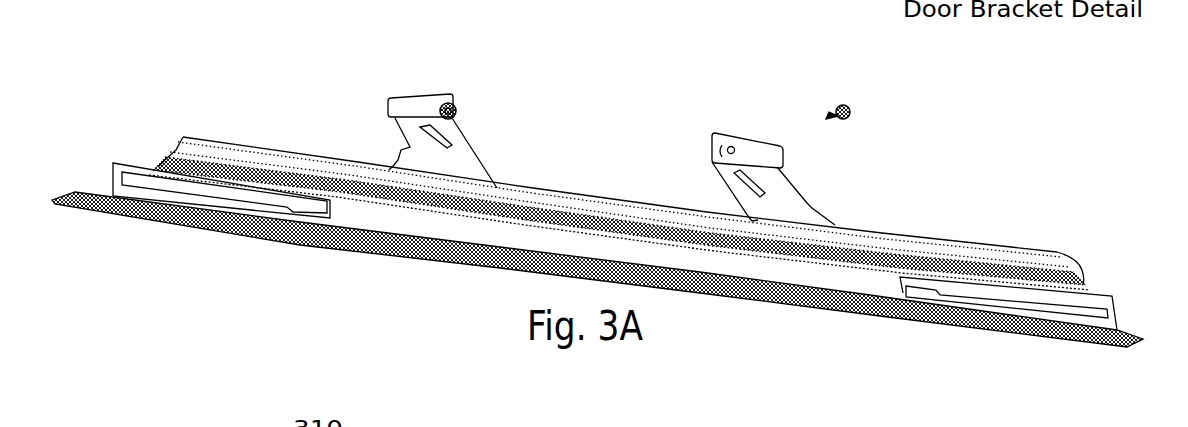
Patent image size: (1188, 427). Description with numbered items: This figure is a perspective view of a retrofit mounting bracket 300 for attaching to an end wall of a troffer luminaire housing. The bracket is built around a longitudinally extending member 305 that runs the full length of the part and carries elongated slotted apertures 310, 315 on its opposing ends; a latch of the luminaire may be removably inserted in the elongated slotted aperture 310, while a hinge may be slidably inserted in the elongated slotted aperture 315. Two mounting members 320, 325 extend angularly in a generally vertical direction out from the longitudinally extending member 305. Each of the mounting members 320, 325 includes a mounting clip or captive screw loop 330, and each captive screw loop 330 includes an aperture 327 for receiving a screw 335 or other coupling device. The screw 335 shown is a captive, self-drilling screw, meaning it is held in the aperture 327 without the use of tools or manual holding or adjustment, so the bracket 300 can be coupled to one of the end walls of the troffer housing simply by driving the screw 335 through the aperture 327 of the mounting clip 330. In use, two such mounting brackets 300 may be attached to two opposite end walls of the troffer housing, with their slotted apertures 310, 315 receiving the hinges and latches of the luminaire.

The retrofit mounting bracket 300 is at (885, 232).
The longitudinally extending member 305 is at (473, 225).
The elongated slotted aperture 310 is at (227, 193).
The elongated slotted aperture 315 is at (928, 287).
The mounting member 320 is at (780, 205).
The mounting member 325 is at (458, 163).
The aperture 327 is at (710, 137).
The captive screw loop 330 is at (800, 140).
The captive self-drilling screw 335 is at (645, 64).